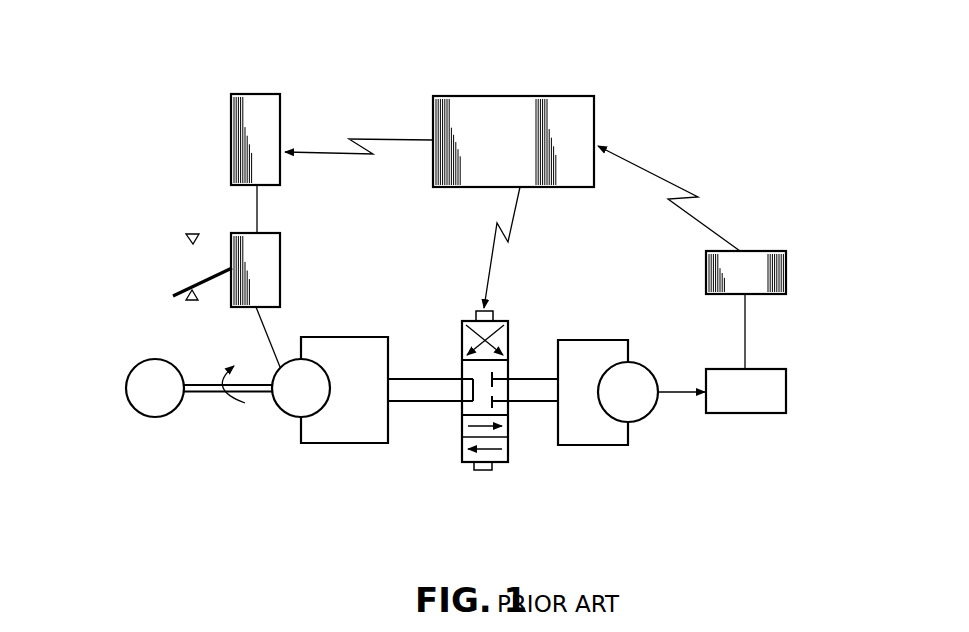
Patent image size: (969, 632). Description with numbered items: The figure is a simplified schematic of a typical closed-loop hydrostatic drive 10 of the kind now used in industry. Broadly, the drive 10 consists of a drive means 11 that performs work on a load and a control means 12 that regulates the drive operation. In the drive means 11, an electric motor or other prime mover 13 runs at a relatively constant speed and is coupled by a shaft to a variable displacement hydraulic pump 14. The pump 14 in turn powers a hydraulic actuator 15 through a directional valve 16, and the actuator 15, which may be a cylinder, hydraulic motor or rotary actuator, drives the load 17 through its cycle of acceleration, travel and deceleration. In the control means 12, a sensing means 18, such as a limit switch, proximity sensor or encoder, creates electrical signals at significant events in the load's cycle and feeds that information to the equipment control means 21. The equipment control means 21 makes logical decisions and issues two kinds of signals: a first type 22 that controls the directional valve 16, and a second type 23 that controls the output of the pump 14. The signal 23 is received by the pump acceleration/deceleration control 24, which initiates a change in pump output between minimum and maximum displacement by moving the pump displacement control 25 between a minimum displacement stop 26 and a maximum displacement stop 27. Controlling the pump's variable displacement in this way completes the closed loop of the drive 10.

The closed-loop hydrostatic drive 10 is at (122, 129).
The drive means 11 is at (212, 466).
The control means 12 is at (562, 70).
The electric motor 13 is at (133, 378).
The variable displacement hydraulic pump 14 is at (291, 419).
The hydraulic actuator 15 is at (646, 405).
The directional valve 16 is at (509, 438).
The load 17 is at (777, 389).
The sensing means 18 is at (775, 270).
The equipment control means 21 is at (594, 112).
The first type of signal 22 is at (493, 265).
The second type of signal 23 is at (330, 152).
The pump acceleration/deceleration control 24 is at (243, 123).
The pump displacement control 25 is at (268, 252).
The minimum displacement stop 26 is at (192, 303).
The maximum displacement stop 27 is at (185, 239).